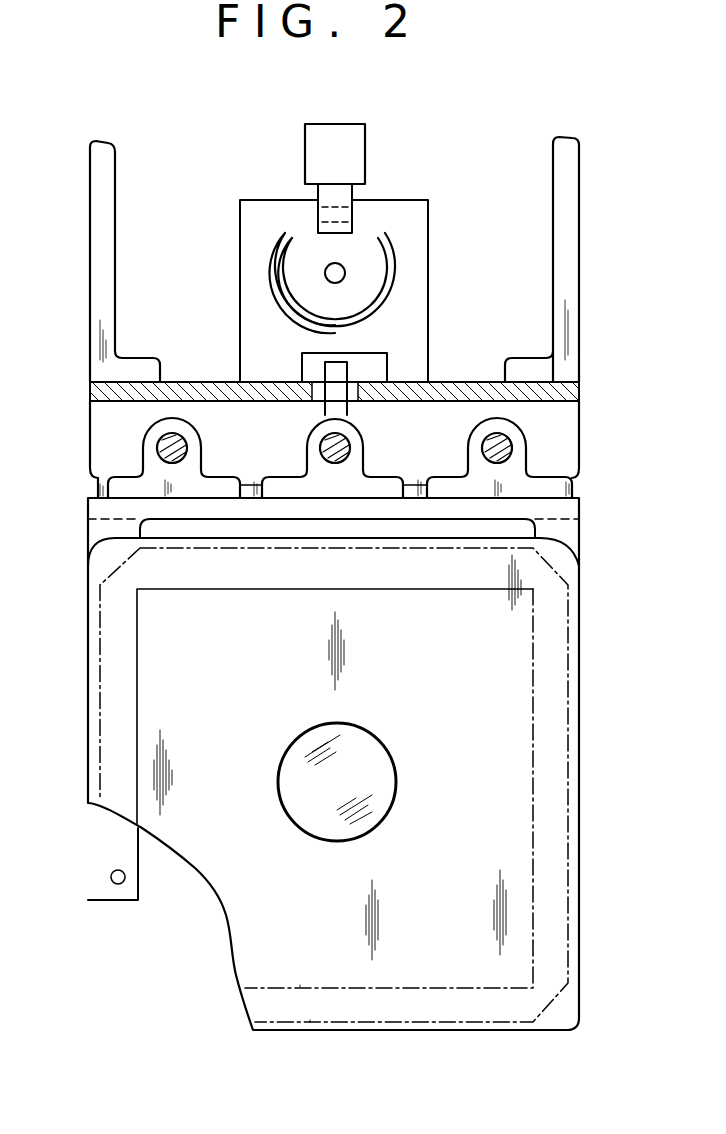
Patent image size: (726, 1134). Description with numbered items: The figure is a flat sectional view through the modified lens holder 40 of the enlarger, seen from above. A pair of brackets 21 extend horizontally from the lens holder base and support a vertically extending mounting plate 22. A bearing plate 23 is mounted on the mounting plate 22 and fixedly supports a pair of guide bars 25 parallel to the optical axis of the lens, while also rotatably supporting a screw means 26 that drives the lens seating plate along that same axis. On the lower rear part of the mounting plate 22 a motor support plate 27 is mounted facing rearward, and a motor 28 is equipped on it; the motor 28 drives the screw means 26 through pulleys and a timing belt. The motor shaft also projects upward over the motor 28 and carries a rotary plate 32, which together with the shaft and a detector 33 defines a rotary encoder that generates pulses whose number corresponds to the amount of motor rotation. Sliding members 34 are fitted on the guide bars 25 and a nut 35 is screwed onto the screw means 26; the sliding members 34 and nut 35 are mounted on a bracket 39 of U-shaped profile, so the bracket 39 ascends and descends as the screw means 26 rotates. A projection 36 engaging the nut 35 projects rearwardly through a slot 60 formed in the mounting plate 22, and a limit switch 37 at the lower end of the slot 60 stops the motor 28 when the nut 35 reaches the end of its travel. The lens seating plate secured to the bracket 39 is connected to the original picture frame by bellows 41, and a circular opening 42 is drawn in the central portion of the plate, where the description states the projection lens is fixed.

The bracket 21 is at (90, 240).
The mounting plate 22 is at (190, 382).
The bearing plate 23 is at (579, 443).
The guide bar 25 is at (160, 442).
The screw means 26 is at (363, 447).
The motor support plate 27 is at (428, 236).
The motor 28 is at (393, 287).
The rotary plate 32 is at (372, 253).
The detector 33 is at (365, 140).
The sliding member 34 is at (200, 447).
The nut 35 is at (307, 452).
The projection 36 is at (330, 378).
The limit switch 37 is at (387, 360).
The bracket 39 is at (579, 500).
The lens holder 40 is at (572, 560).
The bellows 41 is at (533, 673).
The circular opening 42 is at (383, 800).
The slot 60 is at (352, 395).